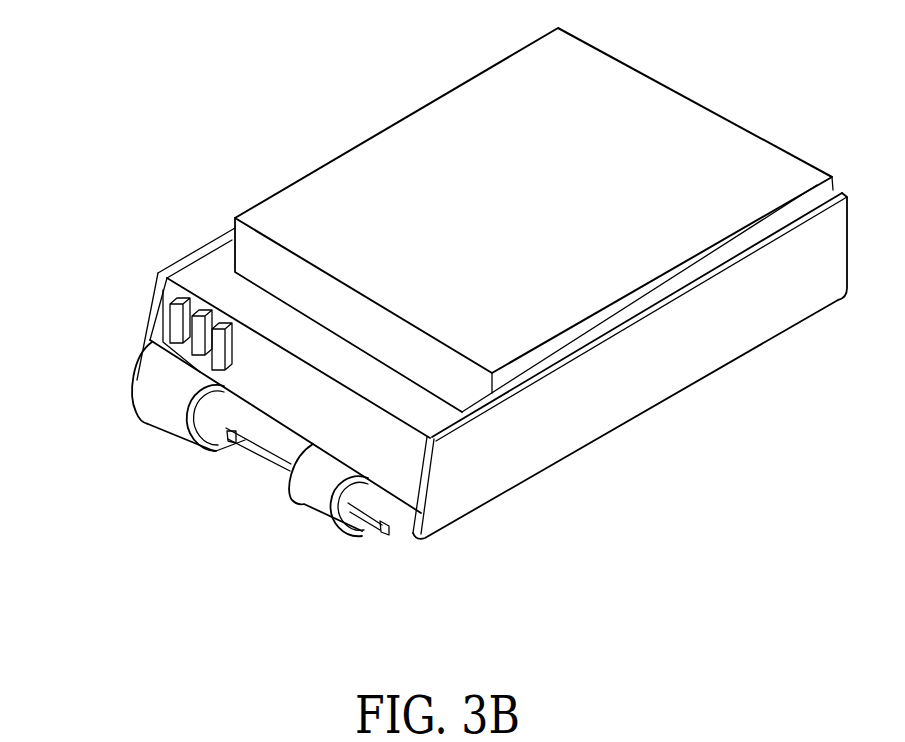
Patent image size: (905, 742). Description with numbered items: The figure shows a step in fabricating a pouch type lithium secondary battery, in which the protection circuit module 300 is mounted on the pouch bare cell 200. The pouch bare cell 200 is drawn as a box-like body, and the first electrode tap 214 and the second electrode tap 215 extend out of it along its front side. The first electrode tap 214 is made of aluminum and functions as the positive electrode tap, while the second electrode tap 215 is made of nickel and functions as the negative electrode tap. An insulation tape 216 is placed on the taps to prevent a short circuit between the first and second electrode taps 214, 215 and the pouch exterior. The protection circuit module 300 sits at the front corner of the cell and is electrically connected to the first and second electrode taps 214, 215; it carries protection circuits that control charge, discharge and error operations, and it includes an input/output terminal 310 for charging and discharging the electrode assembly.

The pouch bare cell 200 is at (416, 150).
The protection circuit module 300 is at (163, 342).
The input/output terminal 310 is at (176, 316).
The first electrode tap 214 is at (306, 494).
The second electrode tap 215 is at (166, 410).
The insulation tape 216 is at (369, 532).